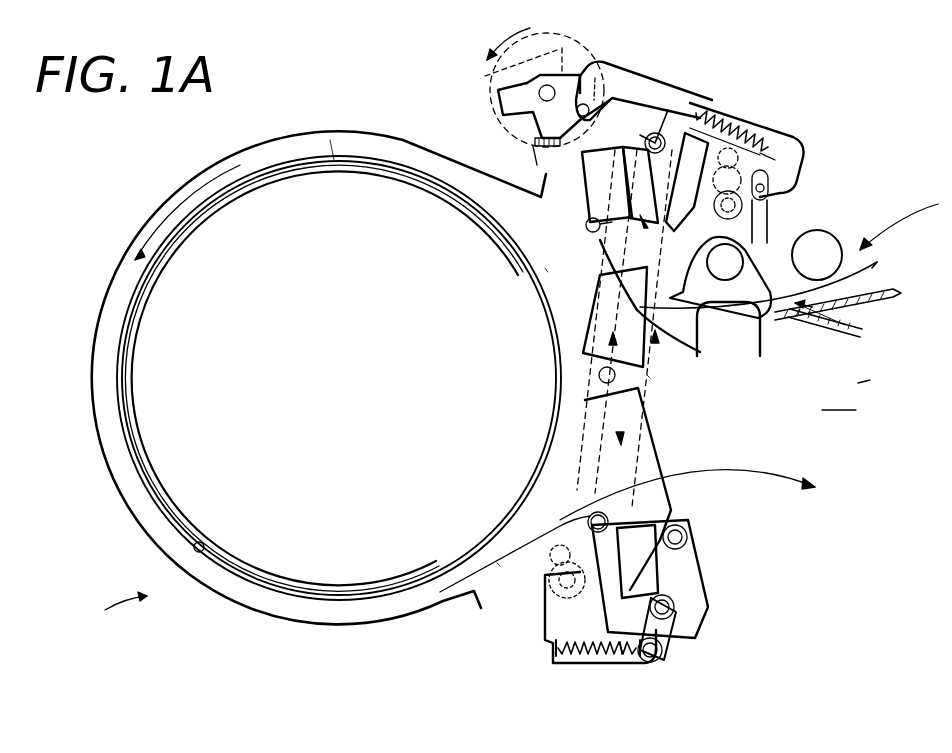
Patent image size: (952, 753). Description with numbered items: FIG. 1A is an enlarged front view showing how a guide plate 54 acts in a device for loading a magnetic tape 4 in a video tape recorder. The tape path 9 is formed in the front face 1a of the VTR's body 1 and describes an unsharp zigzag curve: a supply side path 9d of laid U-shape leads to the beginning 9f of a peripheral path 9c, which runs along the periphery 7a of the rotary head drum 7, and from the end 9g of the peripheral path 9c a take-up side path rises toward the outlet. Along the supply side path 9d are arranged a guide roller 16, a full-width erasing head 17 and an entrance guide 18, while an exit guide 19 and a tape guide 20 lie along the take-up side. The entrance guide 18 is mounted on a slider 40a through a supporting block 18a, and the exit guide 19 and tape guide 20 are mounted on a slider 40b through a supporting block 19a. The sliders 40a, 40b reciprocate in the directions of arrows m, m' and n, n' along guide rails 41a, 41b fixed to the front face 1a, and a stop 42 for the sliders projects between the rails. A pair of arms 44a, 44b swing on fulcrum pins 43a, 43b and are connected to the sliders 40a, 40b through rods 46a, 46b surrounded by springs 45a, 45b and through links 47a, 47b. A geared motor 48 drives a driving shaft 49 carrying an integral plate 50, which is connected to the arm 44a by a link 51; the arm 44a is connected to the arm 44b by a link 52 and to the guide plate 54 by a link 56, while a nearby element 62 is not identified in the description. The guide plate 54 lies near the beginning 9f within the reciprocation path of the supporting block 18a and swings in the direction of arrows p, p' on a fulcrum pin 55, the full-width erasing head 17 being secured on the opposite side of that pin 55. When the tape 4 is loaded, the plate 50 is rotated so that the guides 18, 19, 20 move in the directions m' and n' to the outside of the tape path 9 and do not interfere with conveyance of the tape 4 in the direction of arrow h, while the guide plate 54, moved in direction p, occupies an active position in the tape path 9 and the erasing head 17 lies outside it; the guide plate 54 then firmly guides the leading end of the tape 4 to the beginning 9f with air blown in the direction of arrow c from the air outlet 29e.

The VTR's body 1 is at (116, 610).
The front face 1a is at (851, 413).
The magnetic tape 4 is at (411, 153).
The rotary head drum 7 is at (348, 568).
The periphery 7a is at (201, 541).
The tape path 9 is at (874, 378).
The peripheral path 9c is at (333, 145).
The supply side path 9d is at (890, 300).
The beginning of the peripheral path 9f is at (547, 268).
The end of the peripheral path 9g is at (498, 564).
The guide roller 16 is at (812, 270).
The full-width erasing head 17 is at (742, 343).
The entrance guide 18 is at (580, 225).
The supporting block 18a is at (603, 195).
The exit guide 19 is at (573, 538).
The supporting block 19a is at (643, 560).
The tape guide 20 is at (692, 538).
The air outlet 29e is at (847, 336).
The slider 40a is at (623, 133).
The slider 40b is at (708, 603).
The guide rail 41a is at (607, 304).
The guide rail 41b is at (603, 446).
The stop 42 is at (599, 376).
The fulcrum pin 43a is at (765, 220).
The fulcrum pin 43b is at (545, 584).
The arm 44a is at (747, 166).
The arm 44b is at (548, 631).
The spring 45a is at (762, 153).
The spring 45b is at (625, 661).
The rod 46a is at (723, 133).
The rod 46b is at (580, 663).
The link 47a is at (665, 108).
The link 47b is at (665, 630).
The geared motor 48 is at (497, 82).
The driving shaft 49 is at (627, 97).
The plate 50 is at (540, 148).
The link 51 is at (658, 92).
The link 52 is at (647, 375).
The guide plate 54 is at (690, 337).
The fulcrum pin 55 is at (732, 270).
The link 56 is at (762, 223).
The pad 62 is at (549, 90).
The direction of tape conveyance h is at (172, 210).
The direction of slider movement m is at (623, 320).
The direction of slider movement n is at (625, 453).
The direction of guide plate swing p is at (597, 274).
The direction of blown air c is at (822, 320).